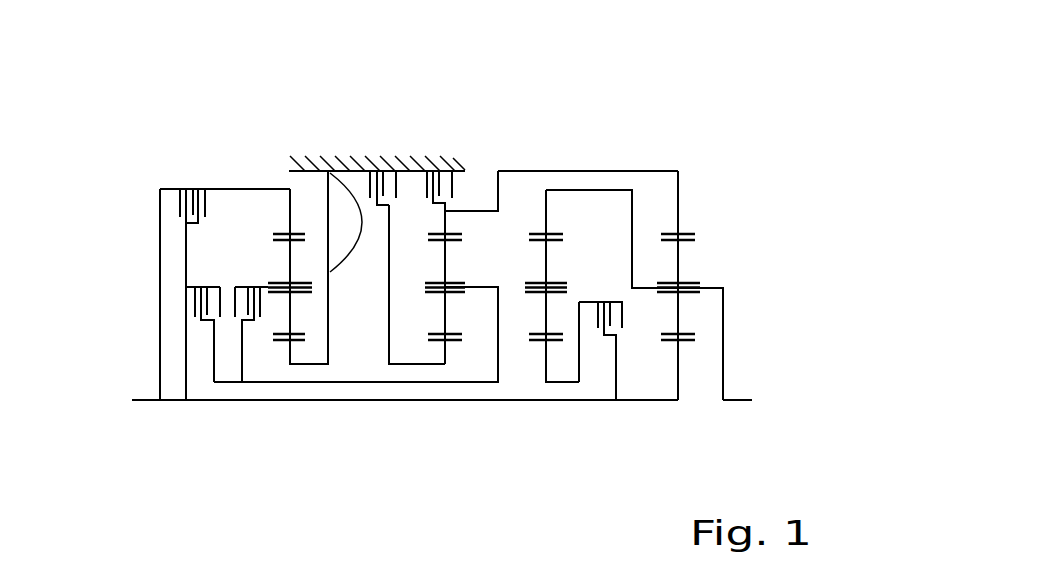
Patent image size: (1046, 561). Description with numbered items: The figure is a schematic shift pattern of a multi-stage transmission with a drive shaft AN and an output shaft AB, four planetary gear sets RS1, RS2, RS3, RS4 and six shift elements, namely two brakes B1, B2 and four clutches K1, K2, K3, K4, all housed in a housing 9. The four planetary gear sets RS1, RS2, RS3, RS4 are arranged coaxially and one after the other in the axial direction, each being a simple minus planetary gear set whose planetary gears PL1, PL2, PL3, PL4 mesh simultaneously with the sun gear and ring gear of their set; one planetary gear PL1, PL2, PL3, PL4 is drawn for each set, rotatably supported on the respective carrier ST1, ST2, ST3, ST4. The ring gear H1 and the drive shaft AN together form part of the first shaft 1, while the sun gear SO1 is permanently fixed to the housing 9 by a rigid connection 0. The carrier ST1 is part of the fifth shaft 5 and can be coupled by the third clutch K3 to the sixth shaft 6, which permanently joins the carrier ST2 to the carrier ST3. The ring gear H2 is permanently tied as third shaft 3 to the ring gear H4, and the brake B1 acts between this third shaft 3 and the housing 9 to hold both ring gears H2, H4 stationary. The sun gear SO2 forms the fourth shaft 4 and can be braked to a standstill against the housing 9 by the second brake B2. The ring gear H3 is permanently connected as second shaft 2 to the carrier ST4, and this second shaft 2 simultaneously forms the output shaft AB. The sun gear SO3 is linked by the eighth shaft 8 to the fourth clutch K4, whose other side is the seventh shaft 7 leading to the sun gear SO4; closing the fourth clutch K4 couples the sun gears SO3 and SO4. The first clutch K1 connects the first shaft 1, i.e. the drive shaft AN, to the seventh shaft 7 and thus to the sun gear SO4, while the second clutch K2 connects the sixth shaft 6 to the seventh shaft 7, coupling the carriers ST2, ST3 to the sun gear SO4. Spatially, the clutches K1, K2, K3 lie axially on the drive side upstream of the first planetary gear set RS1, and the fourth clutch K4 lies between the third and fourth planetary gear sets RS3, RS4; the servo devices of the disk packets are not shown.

The rigid connection 0 is at (442, 215).
The first shaft 1 is at (179, 289).
The second shaft 2 is at (755, 285).
The third shaft 3 is at (655, 146).
The fourth shaft 4 is at (415, 197).
The fifth shaft 5 is at (285, 301).
The sixth shaft 6 is at (266, 444).
The seventh shaft 7 is at (304, 453).
The eighth shaft 8 is at (586, 444).
The housing 9 is at (327, 151).
The planetary gear PL1 is at (204, 161).
The planetary gear PL2 is at (406, 381).
The planetary gear PL3 is at (693, 211).
The planetary gear PL4 is at (760, 236).
The ring gear H1 is at (235, 135).
The ring gear H2 is at (469, 135).
The ring gear H3 is at (626, 135).
The ring gear H4 is at (755, 162).
The sun gear SO1 is at (240, 419).
The sun gear SO2 is at (456, 419).
The sun gear SO3 is at (606, 419).
The sun gear SO4 is at (761, 367).
The carrier ST1 is at (184, 279).
The carrier ST2 is at (535, 159).
The carrier ST3 is at (618, 215).
The carrier ST4 is at (785, 264).
The first planetary gear set RS1 is at (176, 425).
The second planetary gear set RS2 is at (513, 428).
The third planetary gear set RS3 is at (660, 431).
The fourth planetary gear set RS4 is at (775, 441).
The first clutch K1 is at (130, 177).
The second clutch K2 is at (156, 334).
The third clutch K3 is at (151, 323).
The fourth clutch K4 is at (714, 351).
The first brake B1 is at (443, 197).
The second brake B2 is at (361, 118).
The drive shaft AN is at (99, 408).
The output shaft AB is at (793, 424).